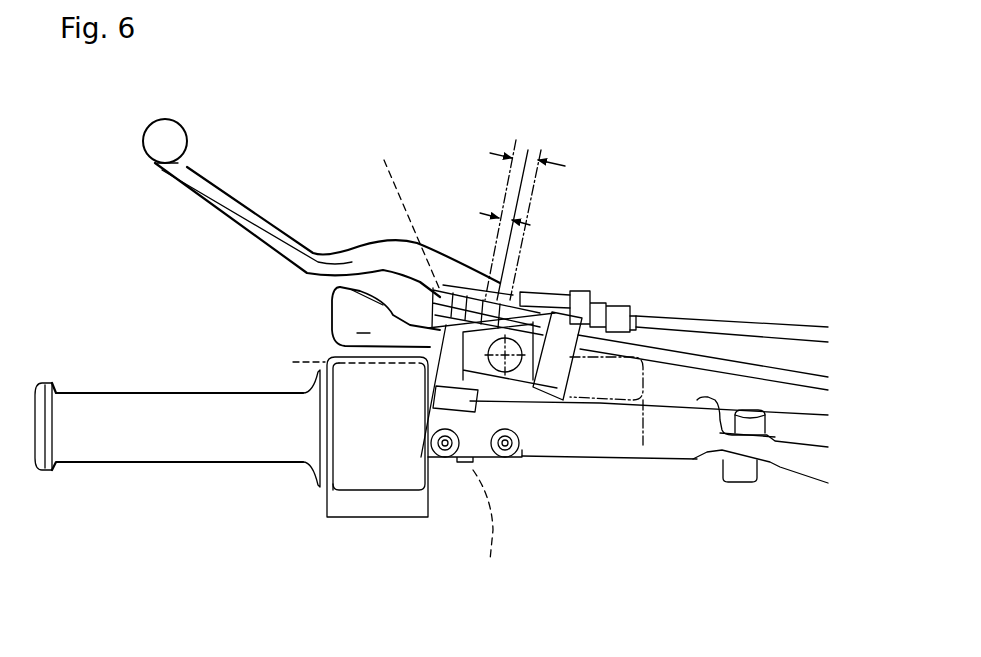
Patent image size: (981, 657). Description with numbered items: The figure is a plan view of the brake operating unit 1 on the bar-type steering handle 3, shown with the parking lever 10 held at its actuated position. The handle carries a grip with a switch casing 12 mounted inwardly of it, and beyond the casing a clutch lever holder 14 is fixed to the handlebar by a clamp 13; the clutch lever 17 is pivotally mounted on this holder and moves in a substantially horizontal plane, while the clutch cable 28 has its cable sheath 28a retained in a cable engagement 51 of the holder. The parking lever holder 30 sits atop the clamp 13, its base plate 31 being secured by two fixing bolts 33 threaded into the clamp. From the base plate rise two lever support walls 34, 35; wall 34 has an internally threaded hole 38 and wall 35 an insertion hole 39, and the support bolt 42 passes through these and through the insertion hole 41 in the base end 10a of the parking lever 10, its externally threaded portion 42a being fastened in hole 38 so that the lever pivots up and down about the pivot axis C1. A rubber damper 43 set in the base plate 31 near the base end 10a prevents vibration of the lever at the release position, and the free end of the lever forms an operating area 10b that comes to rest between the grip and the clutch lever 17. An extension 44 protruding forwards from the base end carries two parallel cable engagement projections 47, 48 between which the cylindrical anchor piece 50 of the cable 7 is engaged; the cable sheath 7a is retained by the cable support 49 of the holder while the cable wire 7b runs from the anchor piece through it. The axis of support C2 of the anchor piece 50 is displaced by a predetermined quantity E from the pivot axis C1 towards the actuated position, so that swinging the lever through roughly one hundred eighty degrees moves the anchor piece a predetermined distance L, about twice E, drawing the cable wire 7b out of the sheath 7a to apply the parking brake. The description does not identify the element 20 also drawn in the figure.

The brake operating unit 1 is at (320, 328).
The bar-type steering handle 3 is at (682, 438).
The cable 7 is at (780, 366).
The cable sheath 7a is at (804, 385).
The cable wire 7b is at (567, 292).
The parking lever 10 is at (323, 308).
The base end 10a is at (533, 390).
The operating area 10b is at (644, 445).
The switch casing 12 is at (342, 518).
The clamp 13 is at (438, 450).
The clutch lever holder 14 is at (540, 297).
The clutch lever 17 is at (215, 182).
The mounting plate 20 is at (463, 460).
The clutch cable 28 is at (704, 317).
The cable sheath 28a is at (726, 332).
The parking lever holder 30 is at (556, 400).
The base plate 31 is at (457, 387).
The fixing bolts 33 is at (505, 460).
The lever support wall 34 is at (305, 392).
The lever support wall 35 is at (425, 290).
The internally threaded hole 38 is at (525, 420).
The insertion hole 39 is at (406, 209).
The insertion hole 41 is at (291, 365).
The support bolt 42 is at (447, 385).
The externally threaded portion 42a is at (498, 533).
The rubber damper 43 is at (518, 368).
The extension 44 is at (430, 288).
The cable engagement projection 47 is at (420, 290).
The cable engagement projection 48 is at (440, 282).
The cable support 49 is at (593, 318).
The cylindrical anchor piece 50 is at (462, 282).
The cable engagement 51 is at (620, 310).
The predetermined distance L is at (530, 153).
The pivot axis C1 is at (517, 197).
The axis of support C2 is at (513, 178).
The predetermined quantity E is at (510, 217).